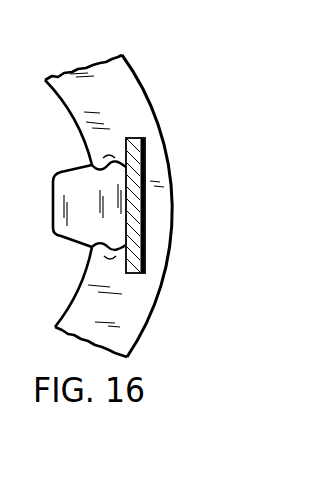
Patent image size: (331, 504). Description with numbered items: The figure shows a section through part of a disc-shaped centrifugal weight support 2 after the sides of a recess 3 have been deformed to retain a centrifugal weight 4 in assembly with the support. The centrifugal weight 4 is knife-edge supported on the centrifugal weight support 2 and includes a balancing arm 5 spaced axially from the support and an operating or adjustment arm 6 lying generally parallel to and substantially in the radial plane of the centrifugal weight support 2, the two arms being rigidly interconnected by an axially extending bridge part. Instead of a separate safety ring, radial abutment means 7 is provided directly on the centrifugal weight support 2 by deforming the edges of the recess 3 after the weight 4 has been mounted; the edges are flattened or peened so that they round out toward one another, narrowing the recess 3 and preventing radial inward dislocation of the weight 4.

The centrifugal weight support 2 is at (141, 302).
The recess 3 is at (92, 247).
The centrifugal weight 4 is at (143, 177).
The balancing arm 5 is at (137, 212).
The adjustment arm 6 is at (67, 183).
The radial abutment means 7 is at (113, 137).